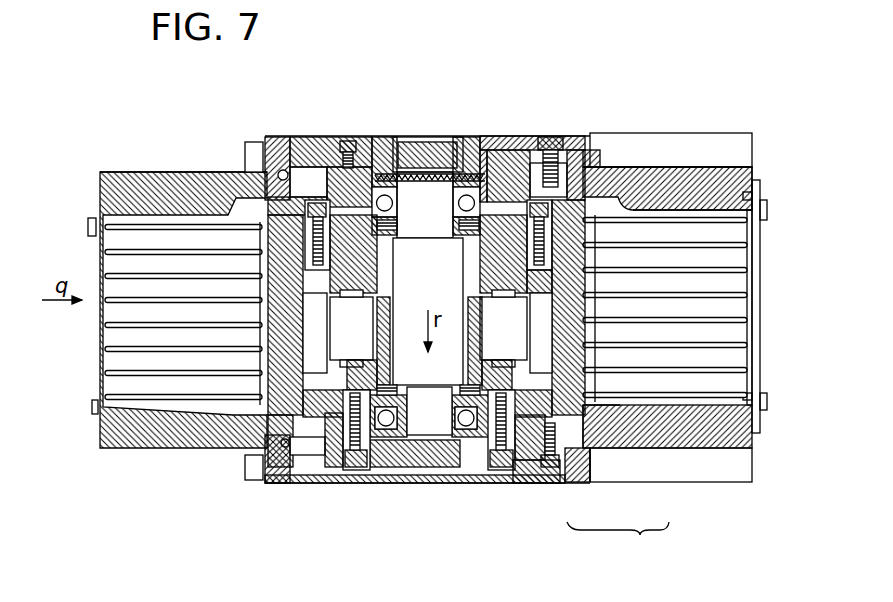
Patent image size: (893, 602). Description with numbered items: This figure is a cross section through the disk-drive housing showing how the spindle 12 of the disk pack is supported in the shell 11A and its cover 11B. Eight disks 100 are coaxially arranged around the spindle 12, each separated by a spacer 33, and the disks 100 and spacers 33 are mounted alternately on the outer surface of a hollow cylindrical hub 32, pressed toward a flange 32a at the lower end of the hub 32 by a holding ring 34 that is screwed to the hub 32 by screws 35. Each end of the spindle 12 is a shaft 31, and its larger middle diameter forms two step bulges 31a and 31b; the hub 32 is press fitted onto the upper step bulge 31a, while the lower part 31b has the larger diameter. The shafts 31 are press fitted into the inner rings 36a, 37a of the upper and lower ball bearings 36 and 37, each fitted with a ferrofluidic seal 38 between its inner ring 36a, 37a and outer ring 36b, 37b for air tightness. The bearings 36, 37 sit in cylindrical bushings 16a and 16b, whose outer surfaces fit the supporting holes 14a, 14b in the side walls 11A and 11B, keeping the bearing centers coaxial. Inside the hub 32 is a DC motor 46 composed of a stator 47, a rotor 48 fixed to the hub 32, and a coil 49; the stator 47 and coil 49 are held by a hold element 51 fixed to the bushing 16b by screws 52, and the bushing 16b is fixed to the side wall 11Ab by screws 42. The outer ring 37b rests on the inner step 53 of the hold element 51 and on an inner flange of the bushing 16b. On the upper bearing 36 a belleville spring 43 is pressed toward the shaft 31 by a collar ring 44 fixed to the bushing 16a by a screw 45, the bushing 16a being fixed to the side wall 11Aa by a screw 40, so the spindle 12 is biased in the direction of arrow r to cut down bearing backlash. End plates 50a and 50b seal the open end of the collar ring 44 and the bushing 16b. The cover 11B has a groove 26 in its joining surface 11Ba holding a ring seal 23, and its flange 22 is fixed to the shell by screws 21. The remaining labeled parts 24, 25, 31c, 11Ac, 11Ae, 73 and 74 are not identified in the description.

The spindle 12 is at (402, 136).
The ball bearing 36 is at (527, 47).
The groove 26 is at (273, 160).
The ring seal 23 is at (263, 167).
The end plate 24 is at (300, 140).
The collar ring 44 is at (355, 136).
The screw 45 is at (340, 136).
The belleville spring 43 is at (378, 136).
The shaft 31 is at (400, 136).
The step bulge 31a is at (398, 260).
The step bulge 31b is at (433, 147).
The shaft lower end 31c is at (445, 440).
The ferrofluidic seal 38 is at (453, 383).
The end plate 50a is at (450, 137).
The end plate 50b is at (538, 483).
The inner ring 36a is at (482, 136).
The outer ring 36b is at (503, 136).
The bushing 16a is at (530, 136).
The bushing 16b is at (430, 457).
The screws 35 is at (540, 136).
The supporting hole 14a is at (557, 136).
The supporting hole 14b is at (550, 483).
The screw 40 is at (558, 137).
The holding ring 34 is at (595, 150).
The cylindrical hub 32 is at (615, 165).
The flange 32a is at (620, 405).
The spacer 33 is at (600, 282).
The shell 11A is at (753, 173).
The side wall 11Aa is at (730, 160).
The side wall 11Ab is at (740, 448).
The housing bottom wall 11Ac is at (753, 447).
The housing bottom plate 11Ae is at (337, 483).
The cover 11B is at (102, 438).
The joining surface 11Ba is at (100, 178).
The disks 100 is at (718, 290).
The cover plate 74 is at (761, 330).
The heat sink 73 is at (95, 352).
The ball bearing 37 is at (460, 581).
The inner ring 37a is at (380, 420).
The outer ring 37b is at (395, 483).
The inner step 53 is at (357, 467).
The bolt 25 is at (328, 483).
The flange 22 is at (282, 483).
The screws 21 is at (252, 482).
The screws 52 is at (520, 483).
The hold element 51 is at (552, 483).
The screws 42 is at (560, 483).
The DC motor 46 is at (647, 556).
The stator 47 is at (572, 450).
The coil 49 is at (570, 417).
The rotor 48 is at (593, 433).